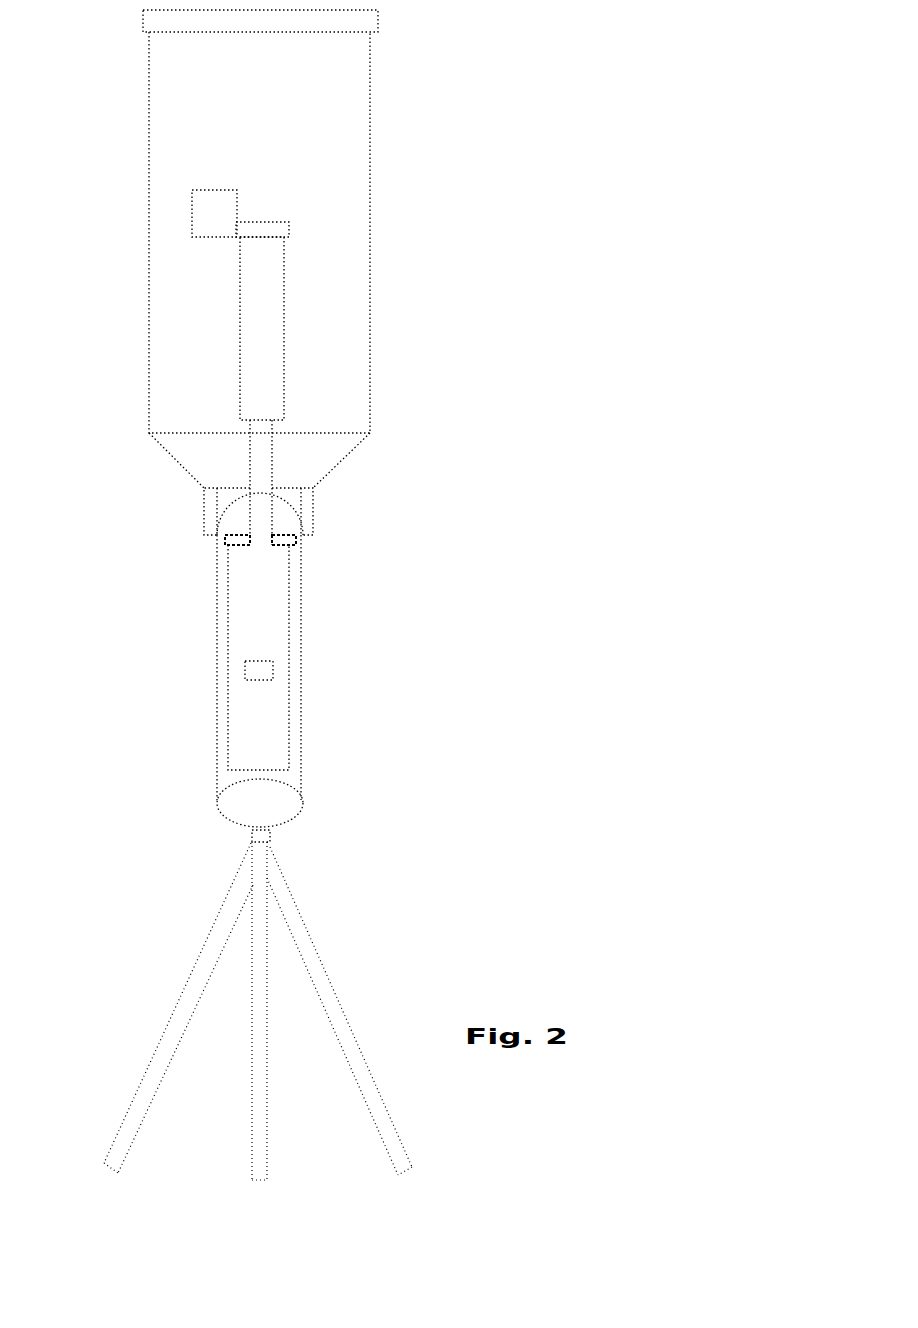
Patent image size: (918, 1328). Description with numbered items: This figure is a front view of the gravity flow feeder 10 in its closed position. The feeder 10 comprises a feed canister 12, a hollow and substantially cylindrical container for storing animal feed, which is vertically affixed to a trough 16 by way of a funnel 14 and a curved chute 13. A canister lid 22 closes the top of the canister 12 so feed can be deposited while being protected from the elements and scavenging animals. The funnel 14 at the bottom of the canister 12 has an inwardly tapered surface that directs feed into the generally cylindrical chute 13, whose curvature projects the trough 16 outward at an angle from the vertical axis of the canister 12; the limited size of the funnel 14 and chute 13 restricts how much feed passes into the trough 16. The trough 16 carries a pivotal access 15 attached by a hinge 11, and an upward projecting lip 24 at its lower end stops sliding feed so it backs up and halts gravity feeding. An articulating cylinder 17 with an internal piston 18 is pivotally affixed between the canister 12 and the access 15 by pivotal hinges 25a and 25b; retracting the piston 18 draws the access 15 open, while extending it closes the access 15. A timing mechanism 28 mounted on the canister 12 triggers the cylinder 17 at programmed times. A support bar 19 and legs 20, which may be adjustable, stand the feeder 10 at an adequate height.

The gravity flow feeder 10 is at (581, 201).
The canister lid 22 is at (378, 18).
The feed canister 12 is at (370, 136).
The funnel 14 is at (188, 453).
The timing mechanism 28 is at (210, 215).
The pivotal hinge 25a is at (285, 229).
The articulating cylinder 17 is at (276, 322).
The curved chute 13 is at (232, 500).
The internal piston 18 is at (258, 519).
The hinge 11 is at (250, 538).
The trough 16 is at (217, 597).
The pivotal access 15 is at (245, 738).
The pivotal hinge 25b is at (268, 675).
The upward projecting lip 24 is at (275, 807).
The support bar 19 is at (248, 832).
The legs 20 is at (318, 953).